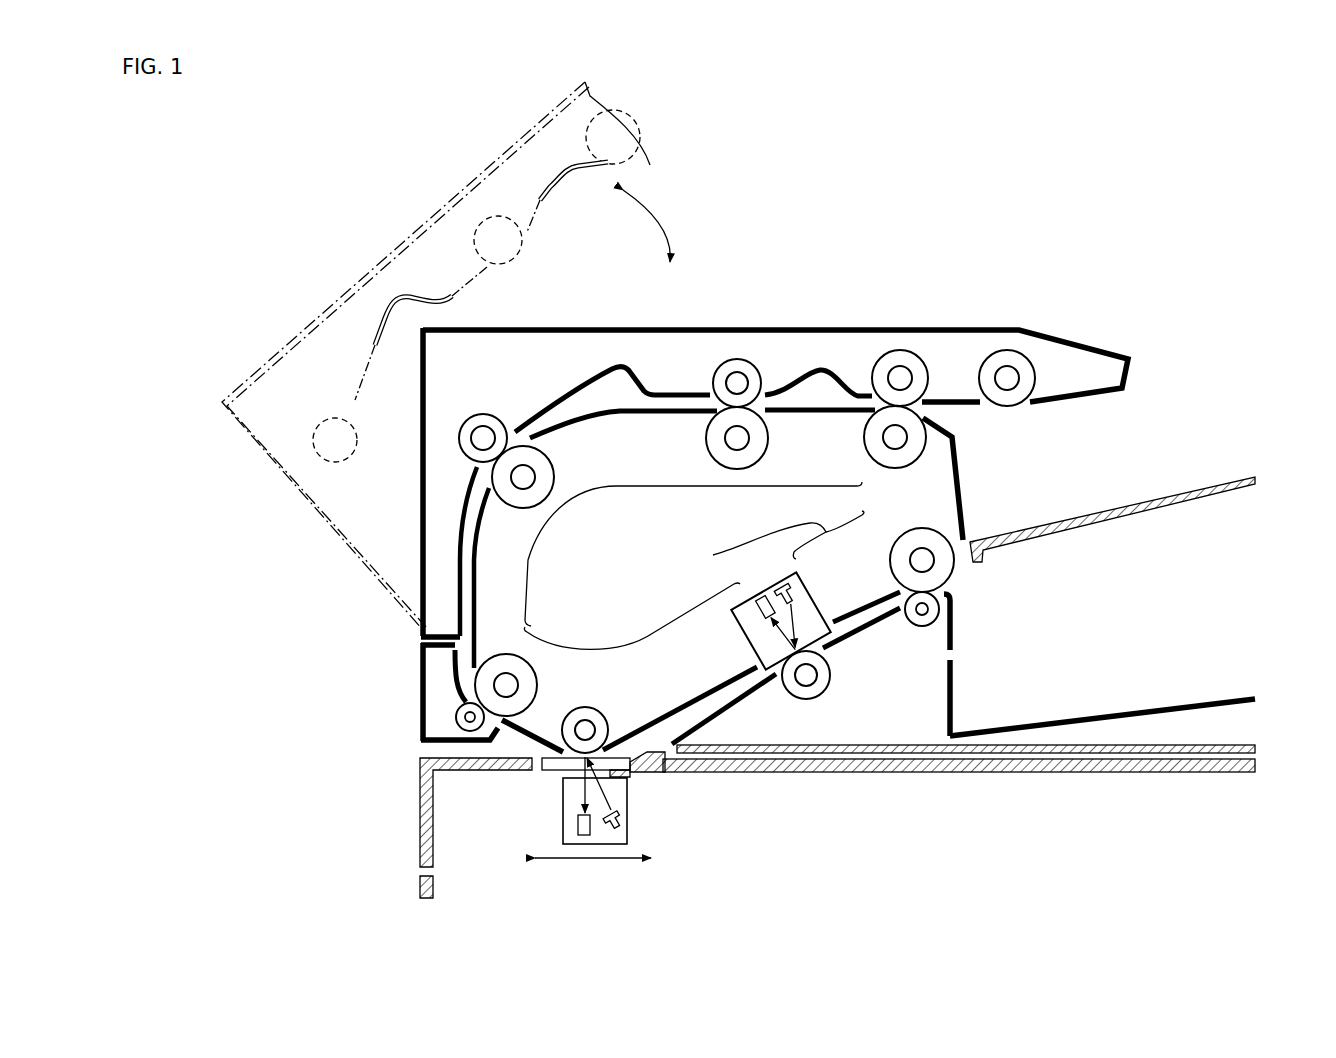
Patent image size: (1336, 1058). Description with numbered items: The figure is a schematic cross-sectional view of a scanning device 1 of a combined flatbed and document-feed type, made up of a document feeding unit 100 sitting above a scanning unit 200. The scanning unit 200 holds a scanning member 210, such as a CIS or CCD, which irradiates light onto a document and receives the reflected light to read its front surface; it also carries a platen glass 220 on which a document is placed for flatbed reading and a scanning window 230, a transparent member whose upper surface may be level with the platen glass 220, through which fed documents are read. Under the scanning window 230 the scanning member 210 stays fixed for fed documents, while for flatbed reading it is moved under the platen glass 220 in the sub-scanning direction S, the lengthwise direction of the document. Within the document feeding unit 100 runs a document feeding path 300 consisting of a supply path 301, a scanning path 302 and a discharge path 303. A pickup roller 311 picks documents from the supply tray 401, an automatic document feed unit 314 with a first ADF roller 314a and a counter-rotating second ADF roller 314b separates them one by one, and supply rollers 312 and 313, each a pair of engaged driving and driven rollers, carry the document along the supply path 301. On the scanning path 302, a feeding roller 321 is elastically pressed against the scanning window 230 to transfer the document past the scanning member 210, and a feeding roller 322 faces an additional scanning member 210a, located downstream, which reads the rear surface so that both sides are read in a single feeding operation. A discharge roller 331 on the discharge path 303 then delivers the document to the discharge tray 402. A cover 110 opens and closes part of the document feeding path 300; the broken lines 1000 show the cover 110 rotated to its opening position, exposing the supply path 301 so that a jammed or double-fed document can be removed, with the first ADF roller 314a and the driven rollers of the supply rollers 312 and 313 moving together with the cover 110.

The scanning device 1 is at (1190, 305).
The document feeding unit 100 is at (408, 693).
The cover 110 is at (605, 327).
The scanning unit 200 is at (410, 825).
The scanning member 210 is at (627, 830).
The additional scanning member 210a is at (818, 608).
The platen glass 220 is at (975, 773).
The scanning window 230 is at (548, 772).
The document feeding path 300 is at (694, 565).
The supply path 301 is at (653, 486).
The scanning path 302 is at (632, 612).
The discharge path 303 is at (713, 555).
The pickup roller 311 is at (1011, 350).
The supply roller 312 is at (750, 360).
The supply roller 313 is at (485, 413).
The automatic document feed unit 314 is at (925, 352).
The first ADF roller 314a is at (897, 350).
The second ADF roller 314b is at (916, 425).
The feeding roller 321 is at (606, 722).
The feeding roller 322 is at (818, 692).
The discharge roller 331 is at (946, 538).
The supply tray 401 is at (1168, 495).
The discharge tray 402 is at (1130, 713).
The broken lines 1000 is at (355, 287).
The sub-scanning direction S is at (598, 863).